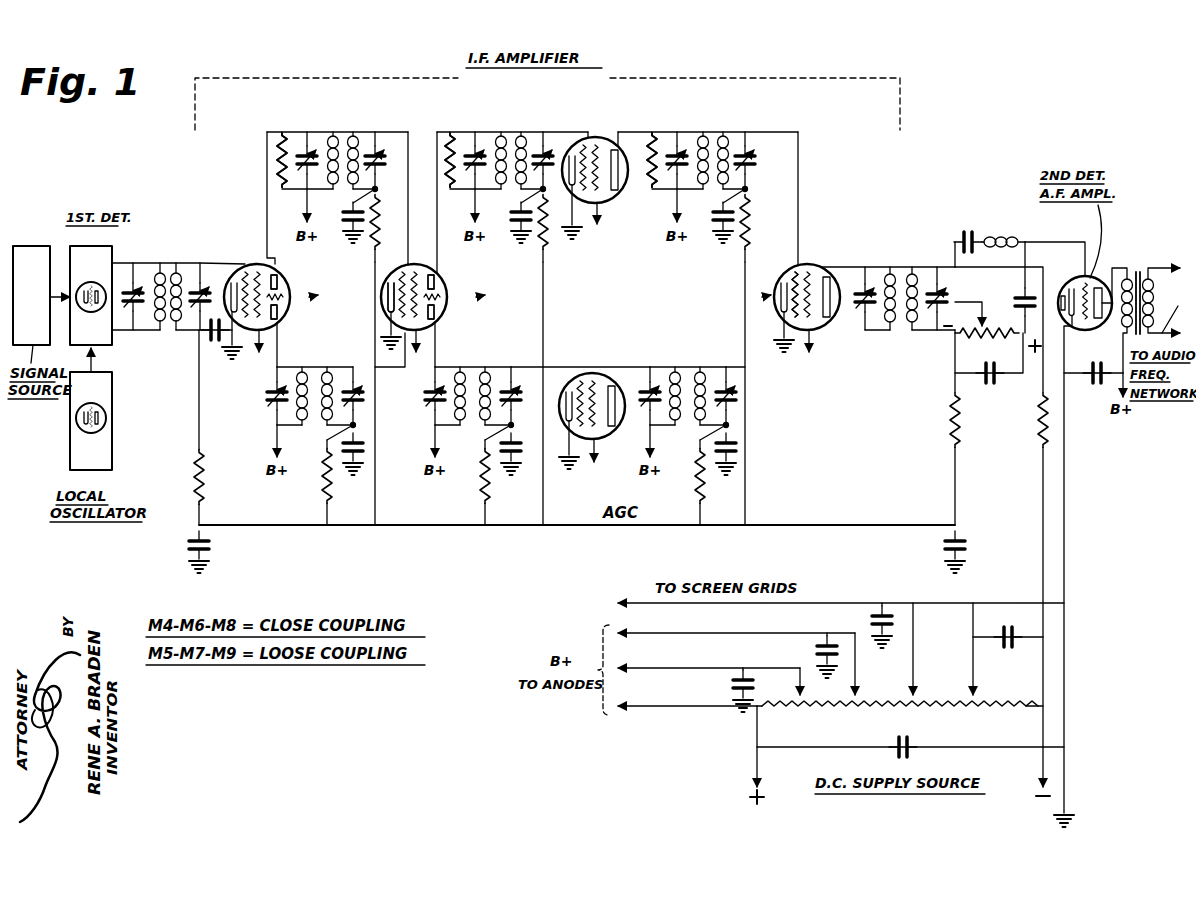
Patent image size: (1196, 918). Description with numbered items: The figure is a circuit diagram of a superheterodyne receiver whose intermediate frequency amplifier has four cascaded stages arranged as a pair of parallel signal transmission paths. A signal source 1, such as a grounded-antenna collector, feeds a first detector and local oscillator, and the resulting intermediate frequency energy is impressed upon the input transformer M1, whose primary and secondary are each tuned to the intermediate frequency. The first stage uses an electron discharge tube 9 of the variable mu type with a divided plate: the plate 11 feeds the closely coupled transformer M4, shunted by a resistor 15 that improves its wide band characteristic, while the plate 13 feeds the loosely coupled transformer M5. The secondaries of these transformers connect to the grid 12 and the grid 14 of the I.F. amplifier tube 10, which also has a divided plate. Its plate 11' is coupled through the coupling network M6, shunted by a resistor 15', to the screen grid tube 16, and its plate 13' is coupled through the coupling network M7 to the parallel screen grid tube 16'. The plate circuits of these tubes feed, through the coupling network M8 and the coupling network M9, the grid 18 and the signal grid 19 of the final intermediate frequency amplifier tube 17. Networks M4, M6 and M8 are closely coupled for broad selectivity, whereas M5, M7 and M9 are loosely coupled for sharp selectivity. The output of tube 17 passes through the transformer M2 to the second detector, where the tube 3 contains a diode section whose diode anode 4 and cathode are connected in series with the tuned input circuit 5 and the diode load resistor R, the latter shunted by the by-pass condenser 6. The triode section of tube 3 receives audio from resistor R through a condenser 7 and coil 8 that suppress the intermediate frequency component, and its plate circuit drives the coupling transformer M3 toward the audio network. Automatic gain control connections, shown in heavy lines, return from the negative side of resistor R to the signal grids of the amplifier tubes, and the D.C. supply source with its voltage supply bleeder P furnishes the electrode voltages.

The signal source 1 is at (31, 295).
The tube 3 is at (1093, 321).
The diode anode 4 is at (1071, 286).
The tuned input circuit 5 is at (938, 333).
The intermediate frequency by-pass condenser 6 is at (986, 382).
The condenser 7 is at (962, 237).
The coil 8 is at (995, 237).
The electron discharge tube 9 is at (270, 306).
The I.F. amplifier tube 10 is at (406, 270).
The plate 11 is at (294, 276).
The plate 11' is at (450, 263).
The grid 12 is at (417, 299).
The plate 13 is at (294, 319).
The plate 13' is at (453, 319).
The grid 14 is at (388, 335).
The resistor 15 is at (291, 144).
The resistor 15' is at (452, 144).
The screen grid tube 16 is at (595, 171).
The screen grid tube 16' is at (592, 410).
The final intermediate frequency amplifier tube 17 is at (794, 298).
The grid 18 is at (795, 268).
The signal grid 19 is at (781, 338).
The input transformer M1 is at (172, 270).
The transformer M2 is at (888, 288).
The coupling transformer M3 is at (1141, 310).
The coupling transformer M4 is at (337, 182).
The transformer M5 is at (334, 364).
The coupling network M6 is at (512, 186).
The coupling network M7 is at (499, 364).
The coupling network M8 is at (730, 128).
The coupling network M9 is at (716, 364).
The diode load resistor R is at (1015, 330).
The voltage supply bleeder P is at (819, 711).